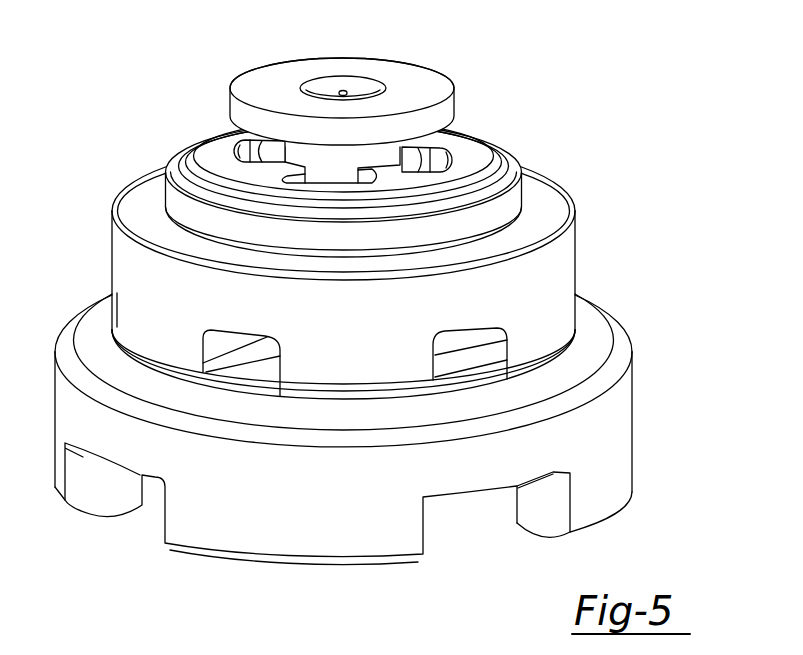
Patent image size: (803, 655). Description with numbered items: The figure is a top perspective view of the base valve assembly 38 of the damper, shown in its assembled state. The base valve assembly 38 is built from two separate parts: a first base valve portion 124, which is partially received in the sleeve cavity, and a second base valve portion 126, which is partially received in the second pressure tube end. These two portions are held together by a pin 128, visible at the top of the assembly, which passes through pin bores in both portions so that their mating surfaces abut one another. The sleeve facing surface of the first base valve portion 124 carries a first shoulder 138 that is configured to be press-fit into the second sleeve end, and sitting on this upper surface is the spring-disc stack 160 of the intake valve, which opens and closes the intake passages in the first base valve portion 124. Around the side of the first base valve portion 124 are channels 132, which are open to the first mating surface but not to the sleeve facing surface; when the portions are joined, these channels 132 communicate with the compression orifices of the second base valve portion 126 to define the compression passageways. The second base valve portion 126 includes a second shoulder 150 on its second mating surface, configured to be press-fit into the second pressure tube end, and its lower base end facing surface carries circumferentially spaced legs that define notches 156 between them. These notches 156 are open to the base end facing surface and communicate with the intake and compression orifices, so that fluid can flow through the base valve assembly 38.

The base valve assembly 38 is at (622, 133).
The first base valve portion 124 is at (542, 287).
The second base valve portion 126 is at (293, 512).
The pin 128 is at (278, 90).
The channels 132 is at (245, 356).
The first shoulder 138 is at (510, 206).
The second shoulder 150 is at (588, 372).
The notches 156 is at (150, 511).
The spring-disc stack 160 is at (463, 157).